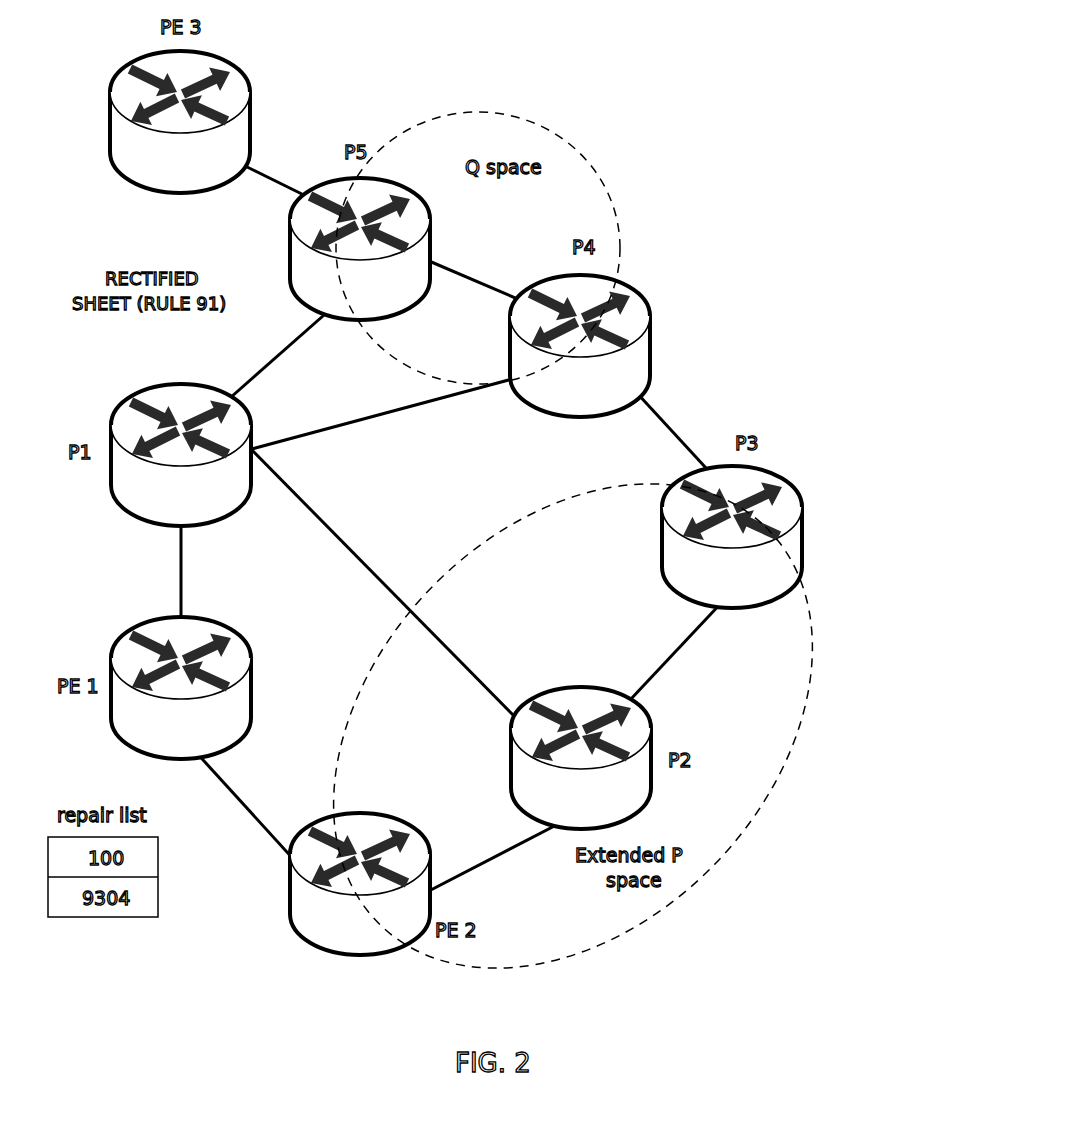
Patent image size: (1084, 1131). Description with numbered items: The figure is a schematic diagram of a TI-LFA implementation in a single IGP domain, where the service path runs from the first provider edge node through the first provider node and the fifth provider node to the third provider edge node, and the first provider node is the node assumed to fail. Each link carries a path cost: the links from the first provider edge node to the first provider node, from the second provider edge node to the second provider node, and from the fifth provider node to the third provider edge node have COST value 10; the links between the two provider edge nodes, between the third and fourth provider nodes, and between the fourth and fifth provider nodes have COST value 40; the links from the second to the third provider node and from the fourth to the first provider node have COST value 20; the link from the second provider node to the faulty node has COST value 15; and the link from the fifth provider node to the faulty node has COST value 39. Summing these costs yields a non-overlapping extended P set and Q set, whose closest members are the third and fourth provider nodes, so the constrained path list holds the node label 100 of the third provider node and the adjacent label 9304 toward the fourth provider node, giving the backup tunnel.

The COST value 10 is at (354, 519).
The COST value 40 is at (450, 560).
The COST value 39 is at (281, 353).
The COST value 20 is at (486, 539).
The COST value 15 is at (382, 582).
The node label 100 is at (812, 537).
The adjacent label 9304 is at (730, 398).